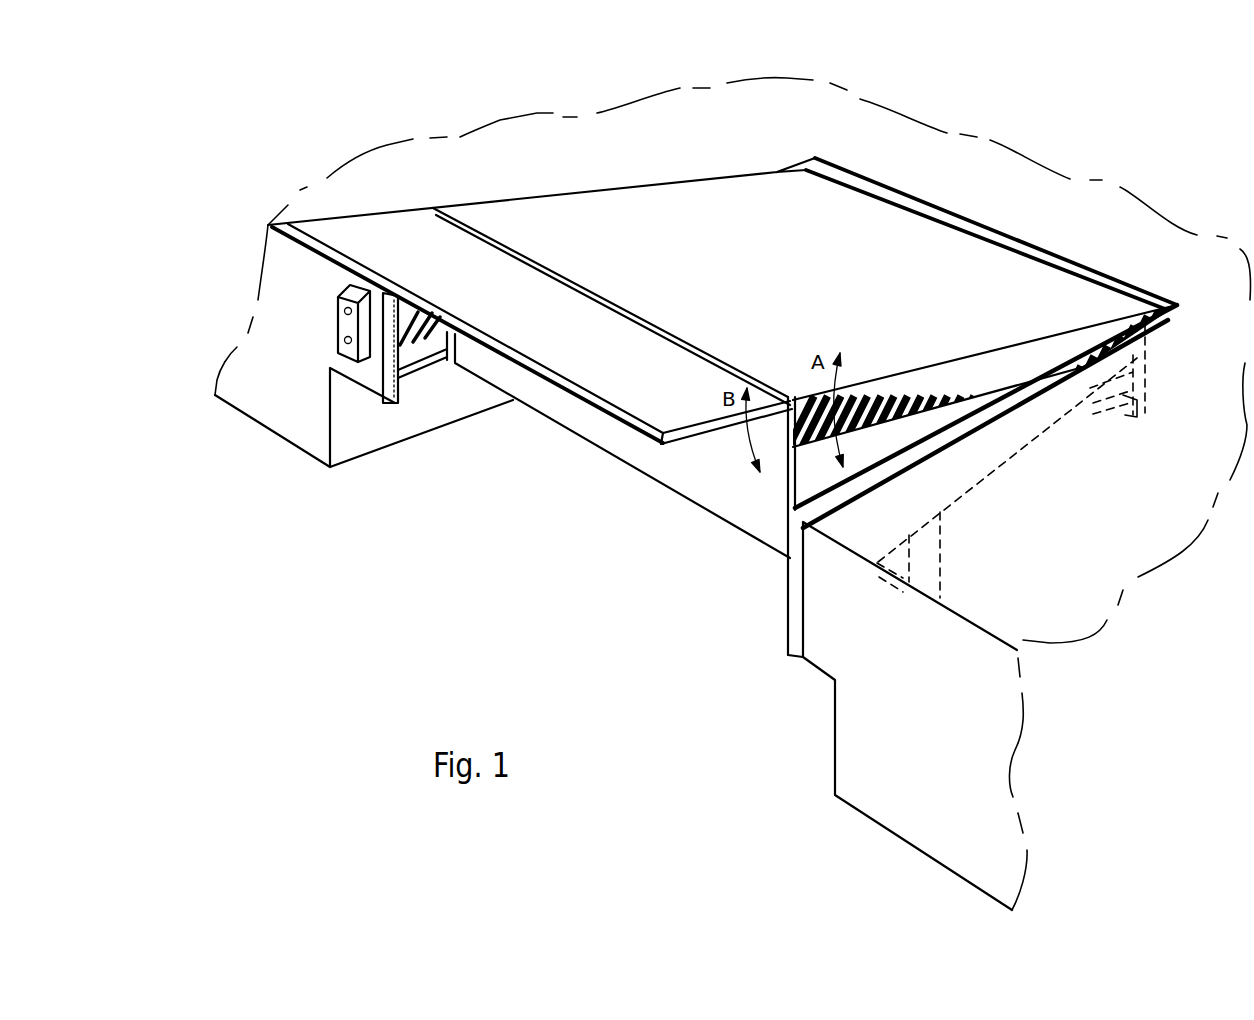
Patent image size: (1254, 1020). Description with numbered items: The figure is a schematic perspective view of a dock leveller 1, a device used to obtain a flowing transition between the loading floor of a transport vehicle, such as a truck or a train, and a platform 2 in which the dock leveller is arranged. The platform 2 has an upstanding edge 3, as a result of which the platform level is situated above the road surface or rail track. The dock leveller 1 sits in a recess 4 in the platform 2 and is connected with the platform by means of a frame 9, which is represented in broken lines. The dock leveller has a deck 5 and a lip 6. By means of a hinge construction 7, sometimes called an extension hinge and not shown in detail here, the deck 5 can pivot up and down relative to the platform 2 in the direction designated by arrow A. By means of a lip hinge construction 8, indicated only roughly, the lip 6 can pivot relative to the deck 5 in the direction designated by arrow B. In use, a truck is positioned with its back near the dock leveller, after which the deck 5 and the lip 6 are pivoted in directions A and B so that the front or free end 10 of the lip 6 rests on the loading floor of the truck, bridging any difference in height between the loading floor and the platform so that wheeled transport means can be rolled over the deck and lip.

The dock leveller 1 is at (1052, 147).
The platform 2 is at (1143, 511).
The upstanding edge 3 is at (943, 725).
The recess 4 is at (374, 426).
The deck 5 is at (801, 283).
The lip 6 is at (557, 331).
The hinge construction 7 is at (1083, 273).
The lip hinge construction 8 is at (479, 225).
The frame 9 is at (968, 488).
The free end 10 is at (577, 402).